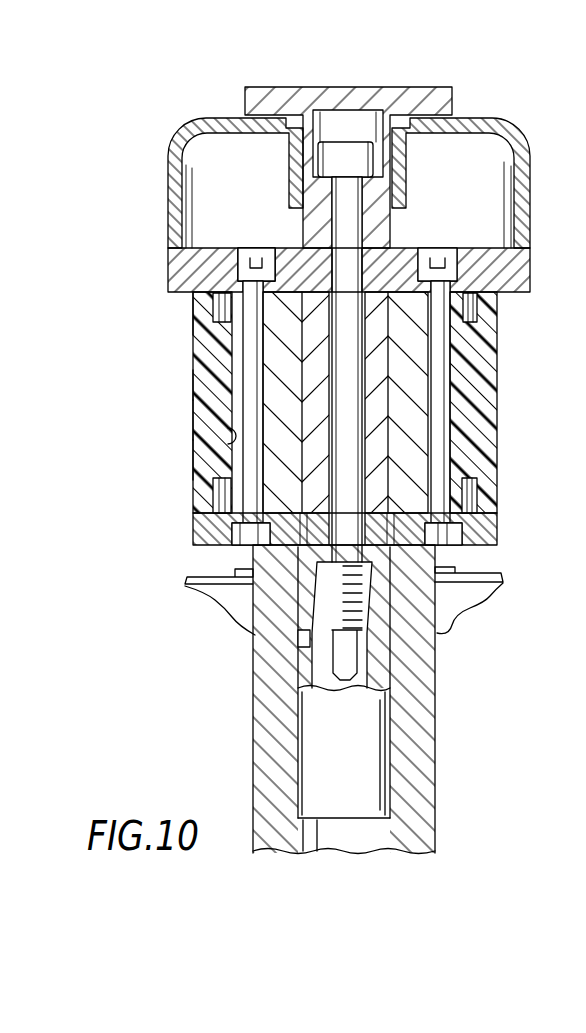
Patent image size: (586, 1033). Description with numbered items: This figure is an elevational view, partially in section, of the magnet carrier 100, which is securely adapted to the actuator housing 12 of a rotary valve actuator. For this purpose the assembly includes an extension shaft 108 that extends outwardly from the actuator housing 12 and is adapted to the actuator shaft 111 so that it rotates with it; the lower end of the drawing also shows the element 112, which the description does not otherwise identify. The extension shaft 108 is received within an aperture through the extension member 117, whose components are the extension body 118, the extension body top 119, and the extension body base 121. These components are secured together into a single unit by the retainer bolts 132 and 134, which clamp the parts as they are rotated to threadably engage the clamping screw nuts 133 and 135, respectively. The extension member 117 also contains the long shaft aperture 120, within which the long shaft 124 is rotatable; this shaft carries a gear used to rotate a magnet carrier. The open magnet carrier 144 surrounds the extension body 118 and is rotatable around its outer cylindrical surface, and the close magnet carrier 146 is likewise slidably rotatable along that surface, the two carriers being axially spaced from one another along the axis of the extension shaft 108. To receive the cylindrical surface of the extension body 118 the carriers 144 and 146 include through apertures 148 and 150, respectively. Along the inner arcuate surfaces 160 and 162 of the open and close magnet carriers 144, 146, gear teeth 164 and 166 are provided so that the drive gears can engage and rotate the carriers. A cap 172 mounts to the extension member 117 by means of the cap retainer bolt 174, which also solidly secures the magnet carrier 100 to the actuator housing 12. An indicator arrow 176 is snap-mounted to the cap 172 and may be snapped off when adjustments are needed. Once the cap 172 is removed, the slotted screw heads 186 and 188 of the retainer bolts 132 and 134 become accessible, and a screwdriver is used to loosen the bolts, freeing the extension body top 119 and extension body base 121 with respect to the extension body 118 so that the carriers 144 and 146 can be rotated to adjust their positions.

The magnet carrier 100 is at (219, 63).
The cap 172 is at (180, 120).
The indicator arrow 176 is at (355, 89).
The cap retainer bolt 174 is at (347, 213).
The extension body top 119 is at (168, 260).
The long shaft aperture 120 is at (230, 248).
The slotted screw head 188 is at (262, 312).
The slotted screw head 186 is at (450, 247).
The retainer bolt 132 is at (440, 342).
The extension member 117 is at (412, 388).
The open magnet carrier 144 is at (197, 353).
The inner arcuate surface 160 is at (197, 323).
The through aperture 148 is at (197, 386).
The retainer bolt 134 is at (198, 414).
The through aperture 150 is at (198, 451).
The open magnet carrier gear teeth 164 is at (197, 302).
The extension body 118 is at (278, 468).
The close magnet carrier 146 is at (478, 448).
The inner arcuate surface 162 is at (473, 493).
The extension body base 121 is at (205, 531).
The clamping screw nut 135 is at (300, 533).
The long shaft 124 is at (258, 488).
The magnet carrier gear teeth 166 is at (483, 527).
The extension shaft 108 is at (250, 605).
The actuator shaft 111 is at (268, 708).
The plug 112 is at (377, 777).
The actuator housing 12 is at (457, 583).
The clamping screw nut 133 is at (493, 583).